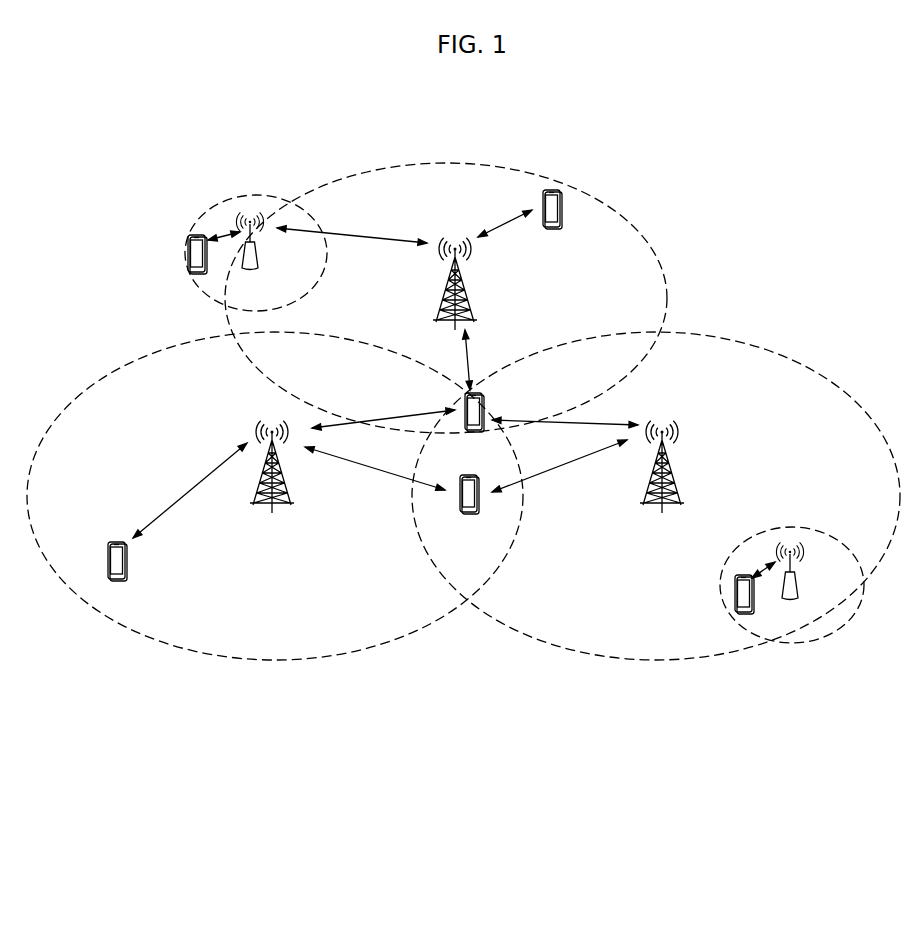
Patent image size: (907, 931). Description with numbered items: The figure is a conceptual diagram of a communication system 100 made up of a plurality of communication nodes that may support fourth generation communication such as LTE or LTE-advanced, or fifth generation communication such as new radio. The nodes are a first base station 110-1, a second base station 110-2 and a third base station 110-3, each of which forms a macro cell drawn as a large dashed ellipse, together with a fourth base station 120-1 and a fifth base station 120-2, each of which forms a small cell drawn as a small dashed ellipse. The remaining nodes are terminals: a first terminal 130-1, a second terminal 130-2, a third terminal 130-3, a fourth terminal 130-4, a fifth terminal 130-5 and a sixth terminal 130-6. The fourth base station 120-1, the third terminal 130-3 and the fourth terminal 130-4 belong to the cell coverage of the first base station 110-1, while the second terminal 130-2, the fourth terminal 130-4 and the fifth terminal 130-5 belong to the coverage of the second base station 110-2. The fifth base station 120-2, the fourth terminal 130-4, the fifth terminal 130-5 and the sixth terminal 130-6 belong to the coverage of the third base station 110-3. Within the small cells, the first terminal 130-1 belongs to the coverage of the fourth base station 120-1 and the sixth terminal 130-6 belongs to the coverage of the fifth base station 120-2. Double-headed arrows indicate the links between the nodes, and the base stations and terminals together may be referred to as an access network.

The communication system 100 is at (461, 139).
The first base station 110-1 is at (462, 288).
The second base station 110-2 is at (272, 511).
The third base station 110-3 is at (672, 470).
The fourth base station 120-1 is at (258, 262).
The fifth base station 120-2 is at (797, 584).
The first terminal 130-1 is at (188, 252).
The second terminal 130-2 is at (126, 560).
The third terminal 130-3 is at (559, 210).
The fourth terminal 130-4 is at (483, 397).
The fifth terminal 130-5 is at (470, 476).
The sixth terminal 130-6 is at (735, 592).